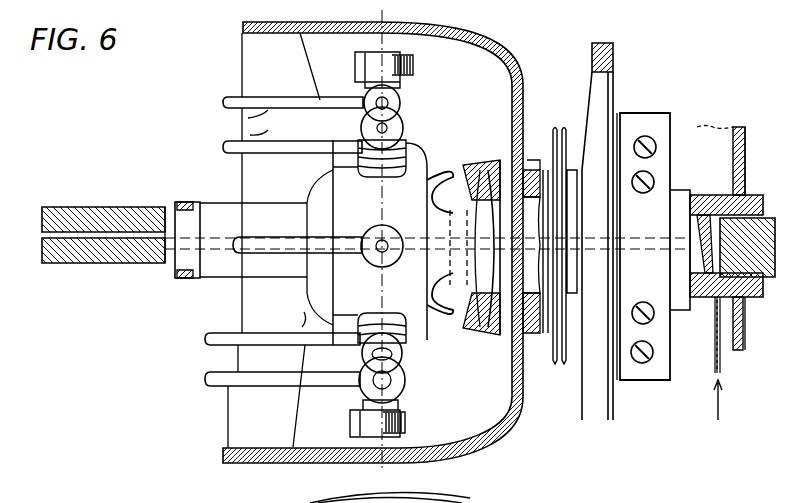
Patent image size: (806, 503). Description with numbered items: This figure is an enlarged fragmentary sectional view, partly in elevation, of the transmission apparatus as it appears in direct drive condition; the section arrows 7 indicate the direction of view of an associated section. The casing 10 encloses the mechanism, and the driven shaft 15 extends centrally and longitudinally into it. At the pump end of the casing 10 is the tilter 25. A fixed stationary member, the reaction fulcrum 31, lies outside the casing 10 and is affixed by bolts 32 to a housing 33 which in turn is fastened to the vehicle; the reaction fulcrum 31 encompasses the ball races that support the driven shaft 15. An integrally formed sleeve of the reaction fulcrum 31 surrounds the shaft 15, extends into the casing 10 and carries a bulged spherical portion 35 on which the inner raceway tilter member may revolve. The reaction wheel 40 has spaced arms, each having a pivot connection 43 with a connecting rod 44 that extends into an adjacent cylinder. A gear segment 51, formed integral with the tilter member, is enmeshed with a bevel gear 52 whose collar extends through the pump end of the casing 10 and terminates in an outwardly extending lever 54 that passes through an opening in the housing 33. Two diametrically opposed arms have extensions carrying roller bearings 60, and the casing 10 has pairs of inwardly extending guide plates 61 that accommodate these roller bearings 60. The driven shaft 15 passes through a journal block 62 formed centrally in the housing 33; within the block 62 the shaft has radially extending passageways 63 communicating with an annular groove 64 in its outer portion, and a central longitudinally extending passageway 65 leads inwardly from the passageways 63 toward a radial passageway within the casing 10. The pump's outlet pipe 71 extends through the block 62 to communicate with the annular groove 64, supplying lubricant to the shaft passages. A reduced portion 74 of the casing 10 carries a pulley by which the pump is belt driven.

The section line arrows 7 is at (350, 22).
The casing 10 is at (250, 464).
The driven shaft 15 is at (160, 297).
The tilter 25 is at (316, 178).
The reaction fulcrum 31 is at (635, 285).
The bolts 32 is at (656, 147).
The housing 33 is at (746, 126).
The spherical portion 35 is at (317, 208).
The reaction wheel 40 is at (417, 186).
The pivot connection 43 is at (390, 104).
The connecting rod 44 is at (243, 127).
The gear segment 51 is at (478, 303).
The bevel gear 52 is at (476, 335).
The lever 54 is at (603, 100).
The roller bearing 60 is at (415, 66).
The guide plates 61 is at (485, 115).
The journal block 62 is at (737, 168).
The radially extending passageways 63 is at (745, 195).
The annular groove 64 is at (745, 150).
The longitudinally extending passageway 65 is at (140, 240).
The outlet pipe 71 is at (716, 328).
The reduced portion 74 is at (528, 170).